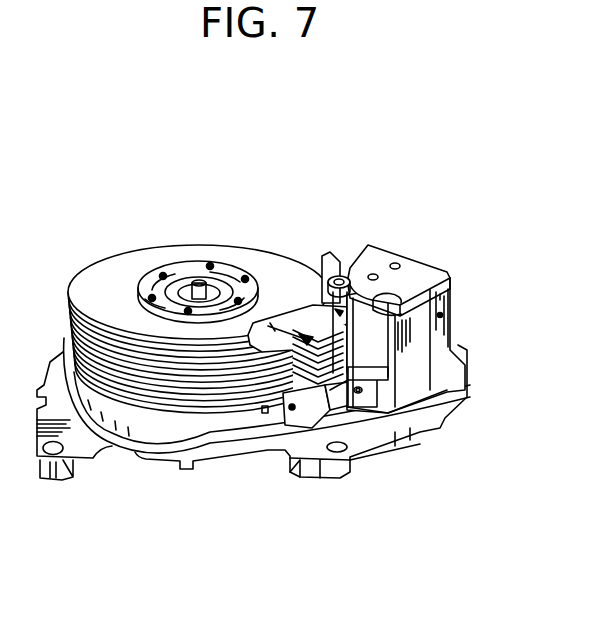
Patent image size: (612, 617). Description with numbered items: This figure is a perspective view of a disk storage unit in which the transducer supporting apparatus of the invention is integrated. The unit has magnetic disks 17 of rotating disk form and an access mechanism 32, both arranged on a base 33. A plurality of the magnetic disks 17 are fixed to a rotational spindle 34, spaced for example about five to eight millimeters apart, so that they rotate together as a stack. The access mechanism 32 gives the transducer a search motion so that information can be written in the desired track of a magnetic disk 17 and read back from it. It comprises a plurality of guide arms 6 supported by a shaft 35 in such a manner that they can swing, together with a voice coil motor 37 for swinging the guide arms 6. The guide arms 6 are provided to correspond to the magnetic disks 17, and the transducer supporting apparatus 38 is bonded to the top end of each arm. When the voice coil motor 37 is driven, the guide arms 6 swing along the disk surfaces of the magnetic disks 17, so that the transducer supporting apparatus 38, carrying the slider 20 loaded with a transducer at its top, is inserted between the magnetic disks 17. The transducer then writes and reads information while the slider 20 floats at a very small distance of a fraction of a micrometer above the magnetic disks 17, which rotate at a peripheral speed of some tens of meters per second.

The magnetic disk 17 is at (103, 282).
The rotational spindle 34 is at (190, 278).
The slider 20 is at (270, 324).
The transducer supporting apparatus 38 is at (280, 328).
The guide arm 6 is at (306, 322).
The shaft 35 is at (346, 280).
The access mechanism 32 is at (415, 256).
The voice coil motor 37 is at (441, 300).
The base 33 is at (167, 437).